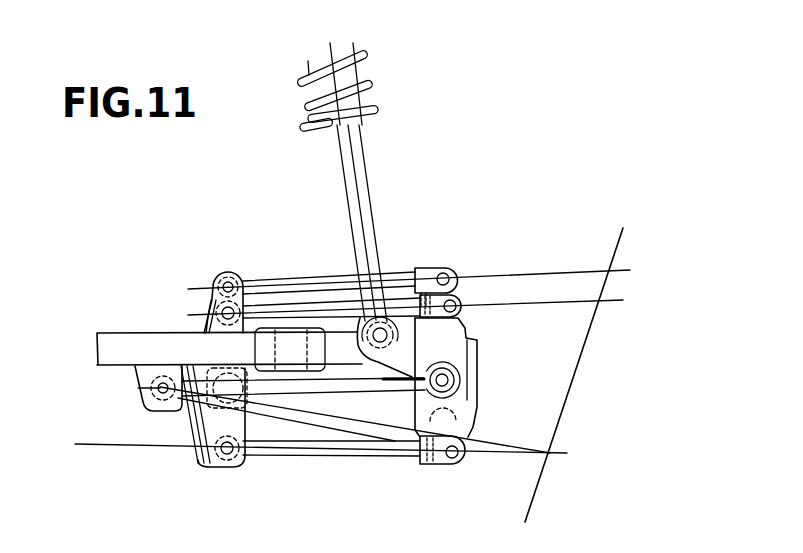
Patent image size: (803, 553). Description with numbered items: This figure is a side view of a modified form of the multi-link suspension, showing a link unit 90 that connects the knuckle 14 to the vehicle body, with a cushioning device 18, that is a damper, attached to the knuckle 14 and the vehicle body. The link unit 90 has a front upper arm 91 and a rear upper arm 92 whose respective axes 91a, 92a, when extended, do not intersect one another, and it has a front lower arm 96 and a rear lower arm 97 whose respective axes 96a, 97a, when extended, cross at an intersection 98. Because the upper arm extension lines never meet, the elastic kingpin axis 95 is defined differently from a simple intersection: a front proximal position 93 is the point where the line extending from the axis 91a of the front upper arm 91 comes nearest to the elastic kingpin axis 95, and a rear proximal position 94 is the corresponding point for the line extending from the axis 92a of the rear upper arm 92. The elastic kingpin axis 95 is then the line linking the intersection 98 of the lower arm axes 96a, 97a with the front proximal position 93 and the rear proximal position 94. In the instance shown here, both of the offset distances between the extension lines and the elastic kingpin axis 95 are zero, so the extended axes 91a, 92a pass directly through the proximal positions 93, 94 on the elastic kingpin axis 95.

The knuckle 14 is at (465, 338).
The cushioning device 18 is at (352, 148).
The link unit 90 is at (462, 233).
The front upper arm 91 is at (270, 290).
The axis of the front upper arm 91a is at (358, 322).
The rear upper arm 92 is at (295, 278).
The axis of the rear upper arm 92a is at (398, 272).
The front proximal position 93 is at (600, 301).
The rear proximal position 94 is at (609, 273).
The elastic kingpin axis 95 is at (565, 410).
The front lower arm 96 is at (272, 452).
The axis of the front lower arm 96a is at (318, 450).
The rear lower arm 97 is at (345, 423).
The axis of the rear lower arm 97a is at (393, 427).
The intersection 98 is at (550, 455).